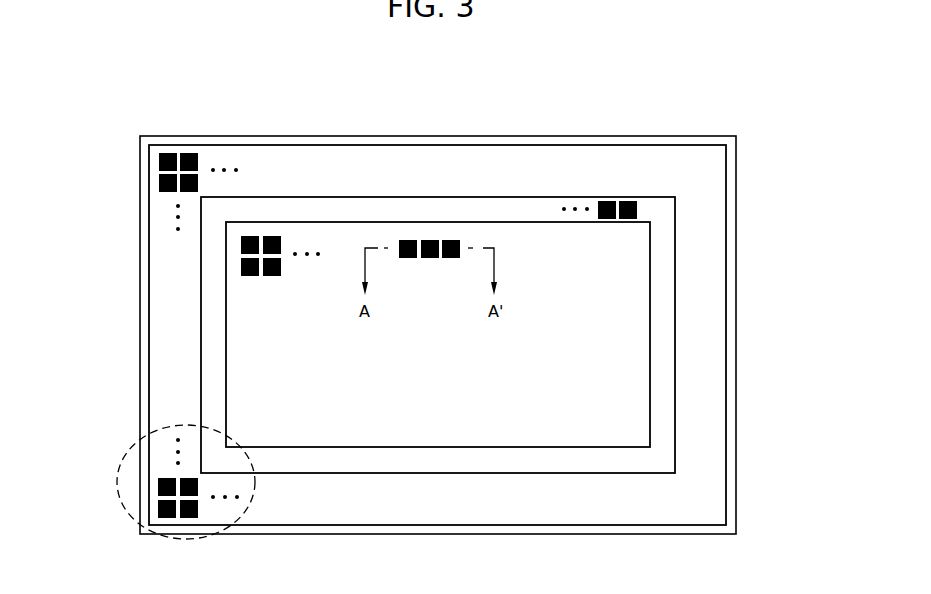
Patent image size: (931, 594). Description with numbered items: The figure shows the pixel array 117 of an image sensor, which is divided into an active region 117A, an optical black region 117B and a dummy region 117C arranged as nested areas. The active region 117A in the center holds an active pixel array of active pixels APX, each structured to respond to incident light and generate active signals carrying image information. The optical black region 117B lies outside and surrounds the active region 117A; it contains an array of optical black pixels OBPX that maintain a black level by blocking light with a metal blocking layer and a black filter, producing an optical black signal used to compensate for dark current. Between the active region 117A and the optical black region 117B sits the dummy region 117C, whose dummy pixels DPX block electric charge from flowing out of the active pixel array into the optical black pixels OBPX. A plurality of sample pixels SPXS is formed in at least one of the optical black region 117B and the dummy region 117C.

The pixel array 117 is at (208, 97).
The active region 117A is at (628, 276).
The optical black region 117B is at (710, 392).
The dummy region 117C is at (665, 337).
The optical black pixel OBPX is at (158, 173).
The active pixel APX is at (425, 238).
The dummy pixel DPX is at (636, 208).
The sample pixels SPXS is at (116, 454).